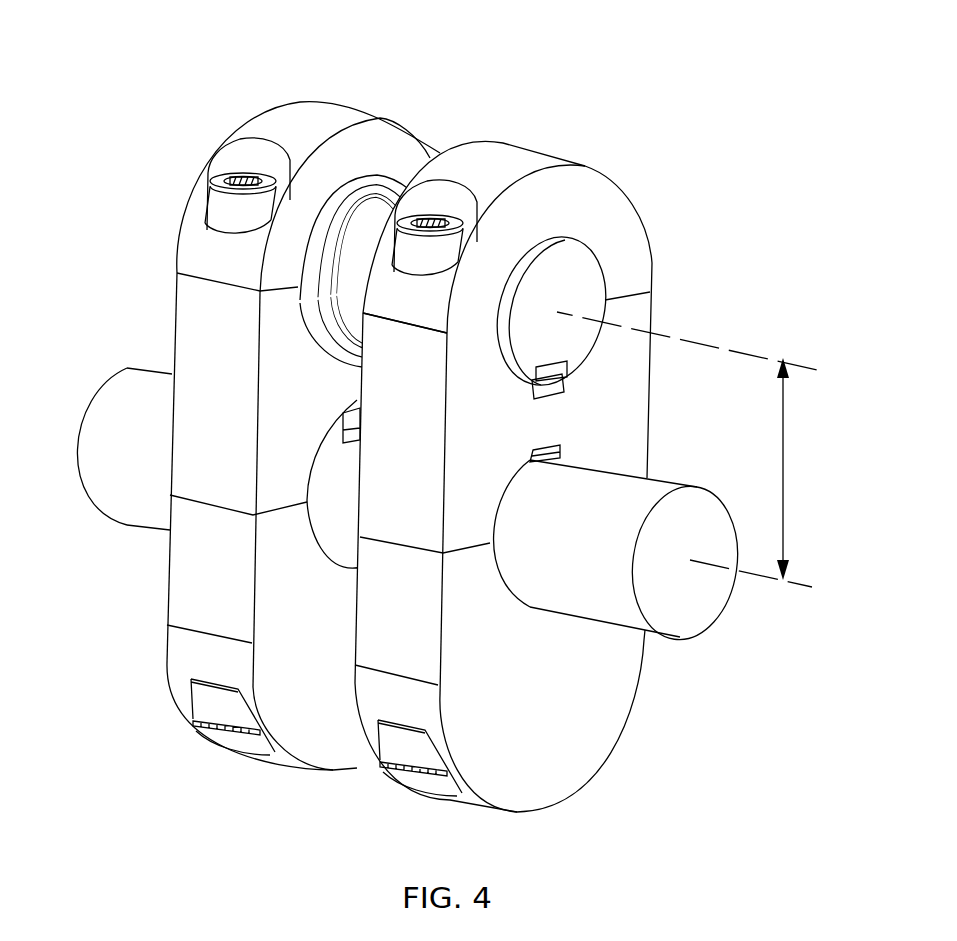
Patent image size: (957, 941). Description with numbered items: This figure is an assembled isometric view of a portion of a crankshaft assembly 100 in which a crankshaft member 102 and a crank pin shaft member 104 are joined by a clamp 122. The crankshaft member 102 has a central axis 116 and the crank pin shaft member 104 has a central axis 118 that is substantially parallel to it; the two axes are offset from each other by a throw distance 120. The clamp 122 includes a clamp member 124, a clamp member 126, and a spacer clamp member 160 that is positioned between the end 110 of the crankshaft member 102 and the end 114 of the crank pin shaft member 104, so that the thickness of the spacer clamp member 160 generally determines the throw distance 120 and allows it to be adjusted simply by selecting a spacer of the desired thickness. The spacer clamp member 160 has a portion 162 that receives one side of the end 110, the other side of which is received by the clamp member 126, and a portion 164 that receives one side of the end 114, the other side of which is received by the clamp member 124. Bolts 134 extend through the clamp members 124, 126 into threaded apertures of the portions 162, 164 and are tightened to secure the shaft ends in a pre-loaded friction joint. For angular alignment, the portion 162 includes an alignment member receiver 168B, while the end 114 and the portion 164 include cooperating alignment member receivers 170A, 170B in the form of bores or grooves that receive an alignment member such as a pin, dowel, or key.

The crankshaft assembly 100 is at (778, 40).
The crankshaft member 102 is at (125, 510).
The crank pin shaft member 104 is at (580, 260).
The end of the crankshaft member 110 is at (337, 540).
The end of the crank pin shaft member 114 is at (595, 282).
The central axis 116 is at (755, 570).
The central axis 118 is at (712, 345).
The throw distance 120 is at (785, 470).
The clamp 122 is at (190, 232).
The clamp member 124 is at (282, 108).
The clamp member 126 is at (180, 660).
The bolts 134 is at (223, 182).
The spacer clamp member 160 is at (187, 316).
The portion 162 is at (457, 535).
The portion 164 is at (468, 350).
The alignment member receiver 168B is at (543, 450).
The alignment member receiver 170A is at (566, 366).
The alignment member receiver 170B is at (545, 392).